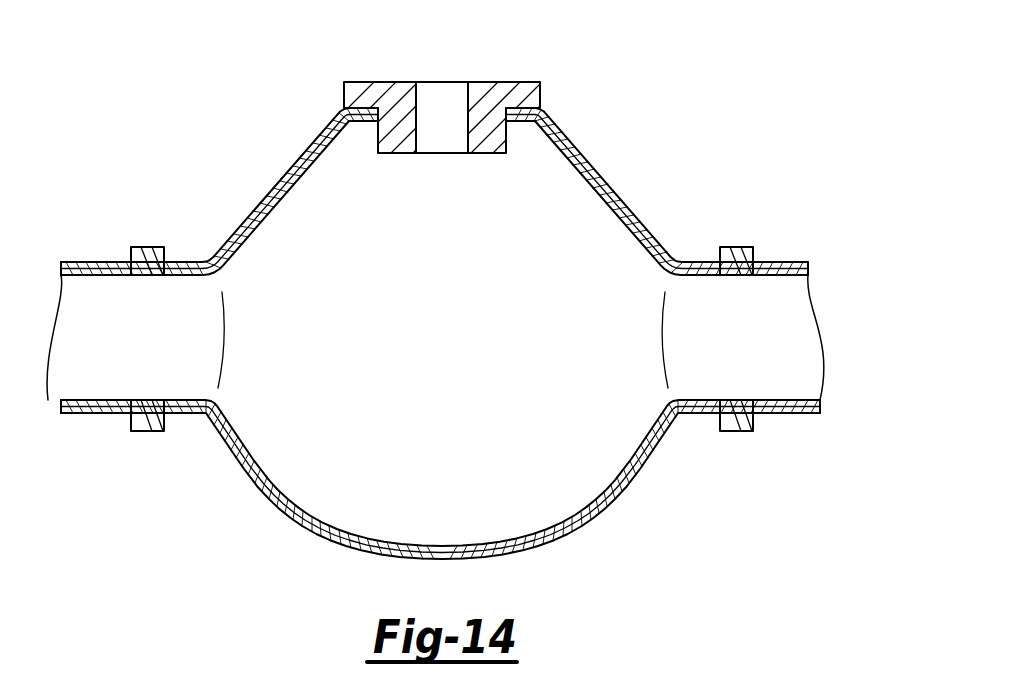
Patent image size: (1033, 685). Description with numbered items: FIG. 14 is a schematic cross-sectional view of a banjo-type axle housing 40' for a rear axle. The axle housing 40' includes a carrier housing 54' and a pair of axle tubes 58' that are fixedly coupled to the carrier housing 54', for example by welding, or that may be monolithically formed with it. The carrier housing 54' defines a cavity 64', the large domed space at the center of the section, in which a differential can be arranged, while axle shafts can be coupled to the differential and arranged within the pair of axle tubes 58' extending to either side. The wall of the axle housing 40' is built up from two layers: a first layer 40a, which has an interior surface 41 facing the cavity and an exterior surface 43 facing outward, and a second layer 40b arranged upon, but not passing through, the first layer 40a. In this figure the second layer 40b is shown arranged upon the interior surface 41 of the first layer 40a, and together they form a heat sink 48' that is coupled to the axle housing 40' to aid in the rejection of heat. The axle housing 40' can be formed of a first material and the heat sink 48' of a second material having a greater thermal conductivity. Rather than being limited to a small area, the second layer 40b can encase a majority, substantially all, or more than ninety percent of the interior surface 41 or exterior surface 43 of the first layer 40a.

The axle housing 40' is at (435, 309).
The first layer 40a is at (617, 190).
The second layer 40b is at (645, 250).
The interior surface 41 is at (570, 159).
The exterior surface 43 is at (589, 131).
The heat sink 48' is at (435, 317).
The carrier housing 54' is at (219, 191).
The axle tubes 58' is at (445, 312).
The cavity 64' is at (440, 479).